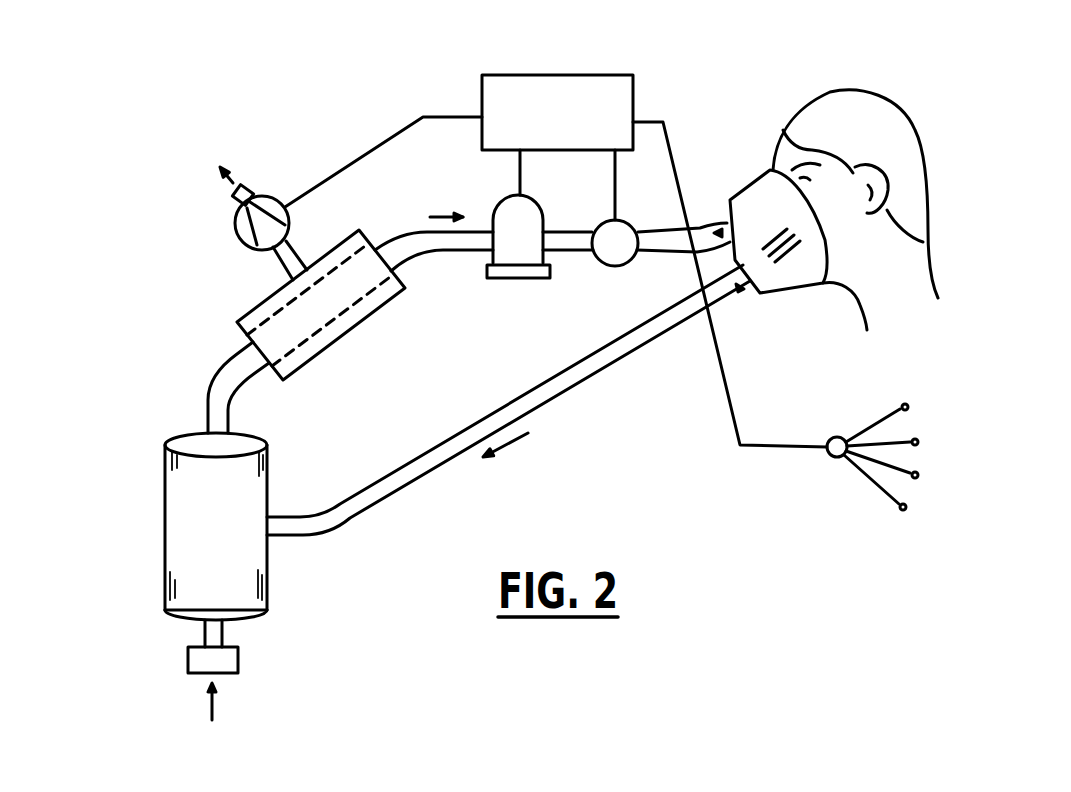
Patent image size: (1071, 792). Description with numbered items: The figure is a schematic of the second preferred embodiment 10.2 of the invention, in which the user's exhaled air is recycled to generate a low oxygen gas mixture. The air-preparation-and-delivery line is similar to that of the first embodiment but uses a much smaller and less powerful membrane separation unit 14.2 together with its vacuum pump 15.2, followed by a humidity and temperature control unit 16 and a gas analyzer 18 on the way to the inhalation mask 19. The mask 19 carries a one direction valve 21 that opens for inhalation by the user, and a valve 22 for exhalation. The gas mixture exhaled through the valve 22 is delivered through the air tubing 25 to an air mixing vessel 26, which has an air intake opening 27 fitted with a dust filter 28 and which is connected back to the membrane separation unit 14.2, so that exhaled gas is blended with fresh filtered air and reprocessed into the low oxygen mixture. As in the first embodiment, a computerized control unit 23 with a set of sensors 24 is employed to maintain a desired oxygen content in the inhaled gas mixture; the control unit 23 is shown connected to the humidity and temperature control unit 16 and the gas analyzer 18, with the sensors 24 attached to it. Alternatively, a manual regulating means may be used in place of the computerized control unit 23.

The second preferred embodiment 10.2 is at (200, 315).
The membrane separation unit 14.2 is at (353, 318).
The vacuum pump 15.2 is at (265, 220).
The humidity and temperature control unit 16 is at (515, 245).
The gas analyzer 18 is at (612, 250).
The inhalation mask 19 is at (762, 200).
The one direction valve 21 is at (720, 233).
The exhalation valve 22 is at (742, 290).
The computerized control unit 23 is at (568, 128).
The set of sensors 24 is at (832, 457).
The air tubing 25 is at (567, 383).
The air mixing vessel 26 is at (238, 557).
The air intake opening 27 is at (235, 657).
The dust filter 28 is at (227, 670).